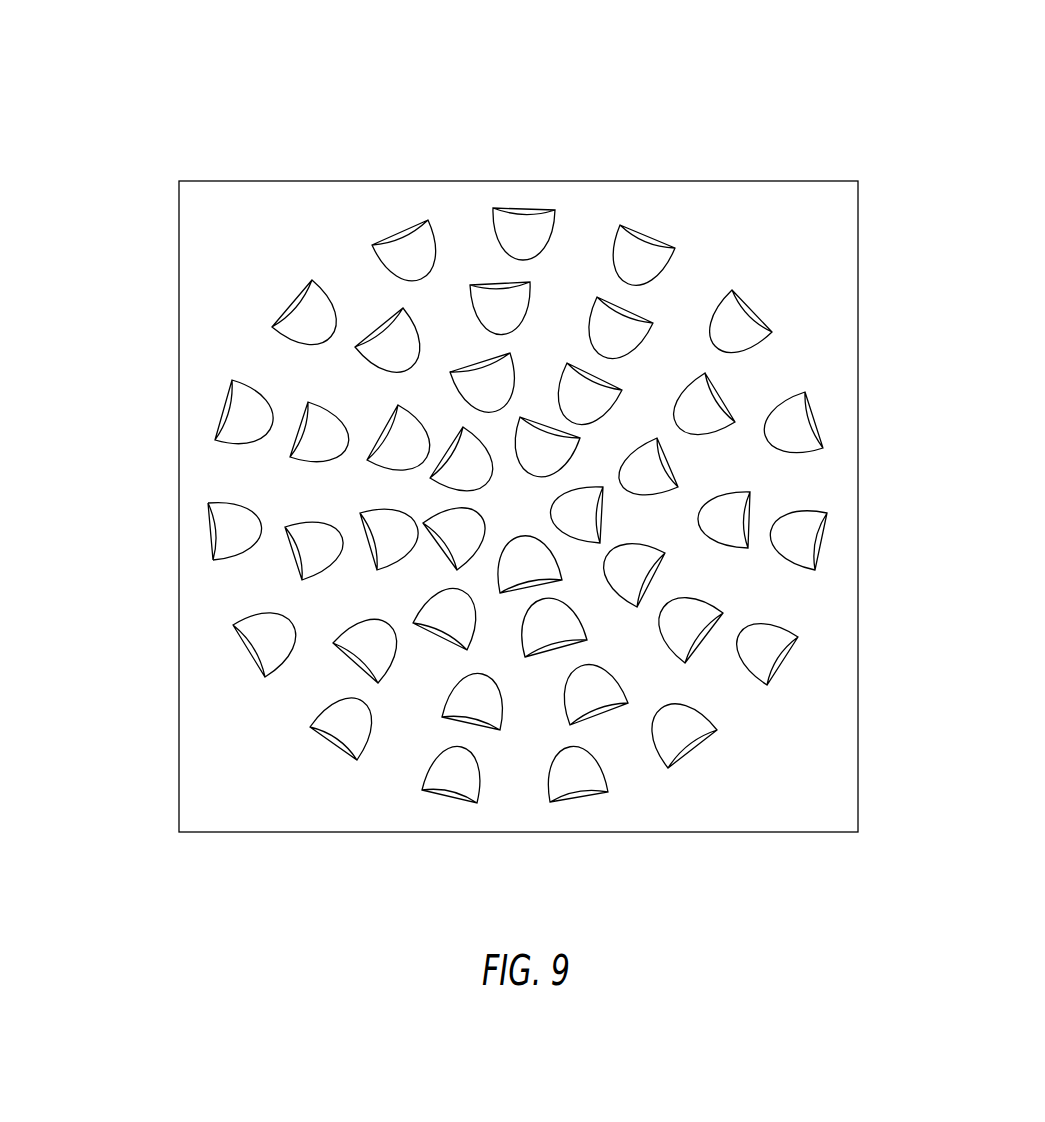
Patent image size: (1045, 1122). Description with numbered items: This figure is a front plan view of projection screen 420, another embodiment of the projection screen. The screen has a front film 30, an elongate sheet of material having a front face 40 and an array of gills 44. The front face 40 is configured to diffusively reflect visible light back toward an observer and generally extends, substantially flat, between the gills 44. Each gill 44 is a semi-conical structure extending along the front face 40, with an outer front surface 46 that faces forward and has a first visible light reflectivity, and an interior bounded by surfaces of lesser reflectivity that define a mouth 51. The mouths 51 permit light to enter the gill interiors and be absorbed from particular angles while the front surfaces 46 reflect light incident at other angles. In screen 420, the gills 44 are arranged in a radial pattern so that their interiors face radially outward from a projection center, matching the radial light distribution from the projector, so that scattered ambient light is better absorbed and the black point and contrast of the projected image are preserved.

The projection screen 420 is at (108, 140).
The front film 30 is at (848, 697).
The front face 40 is at (790, 597).
The gill 44 is at (233, 500).
The mouth 51 is at (209, 530).
The front surface 46 is at (223, 563).